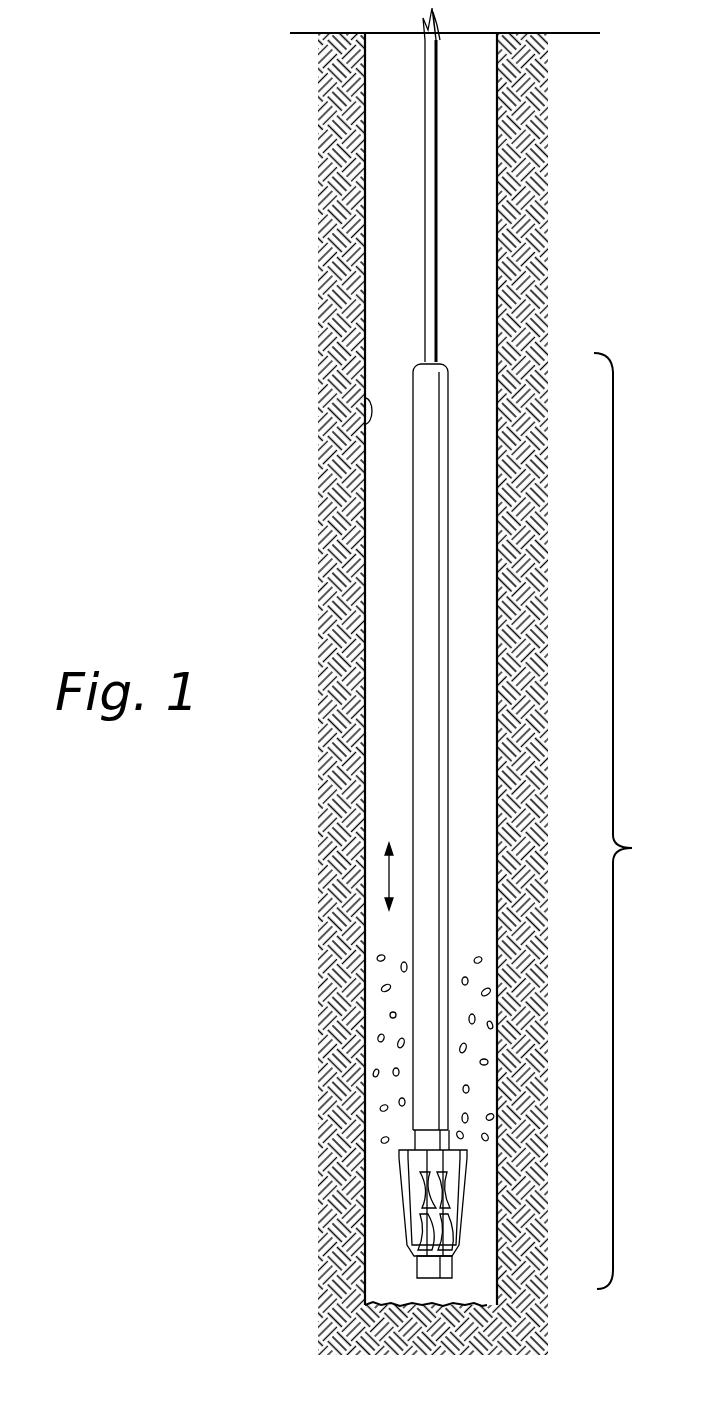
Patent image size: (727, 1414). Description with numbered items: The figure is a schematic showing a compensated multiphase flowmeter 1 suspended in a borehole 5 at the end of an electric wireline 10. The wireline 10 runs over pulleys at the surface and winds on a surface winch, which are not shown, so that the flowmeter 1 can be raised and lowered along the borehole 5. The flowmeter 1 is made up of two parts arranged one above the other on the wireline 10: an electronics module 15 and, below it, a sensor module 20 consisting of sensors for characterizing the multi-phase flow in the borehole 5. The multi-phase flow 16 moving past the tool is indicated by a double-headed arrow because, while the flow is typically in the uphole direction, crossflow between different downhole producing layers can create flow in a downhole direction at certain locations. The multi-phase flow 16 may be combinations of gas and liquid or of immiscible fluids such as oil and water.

The compensated multiphase flowmeter 1 is at (627, 821).
The borehole 5 is at (365, 400).
The electric wireline 10 is at (428, 325).
The electronics module 15 is at (430, 505).
The multi-phase flow 16 is at (385, 880).
The sensor module 20 is at (403, 1198).